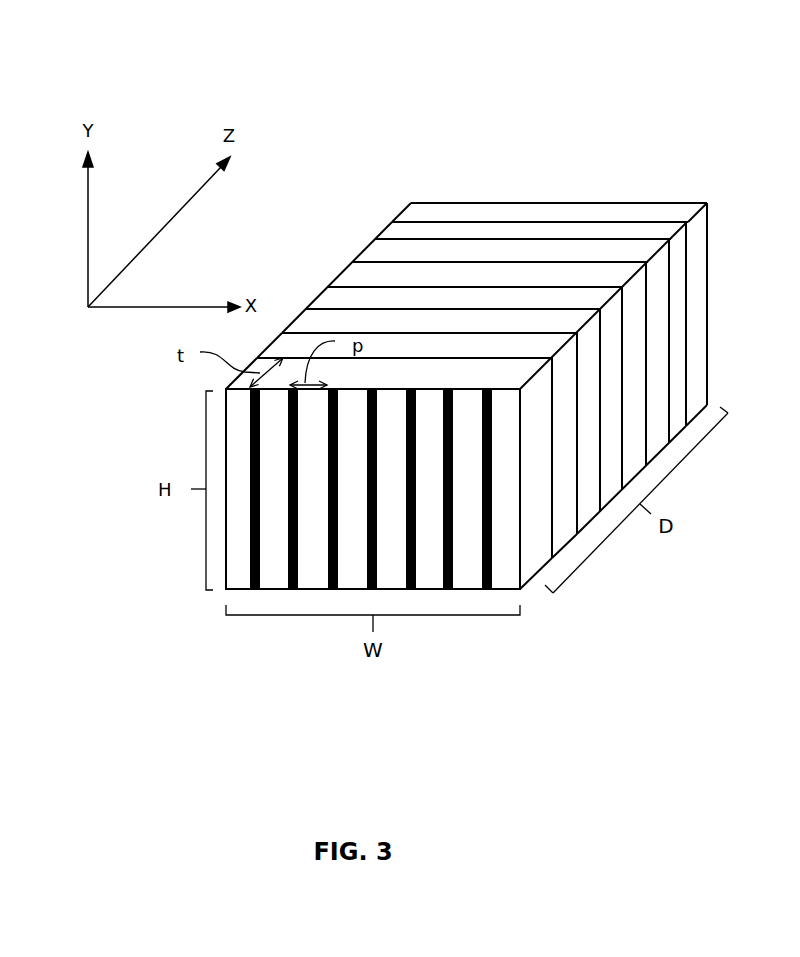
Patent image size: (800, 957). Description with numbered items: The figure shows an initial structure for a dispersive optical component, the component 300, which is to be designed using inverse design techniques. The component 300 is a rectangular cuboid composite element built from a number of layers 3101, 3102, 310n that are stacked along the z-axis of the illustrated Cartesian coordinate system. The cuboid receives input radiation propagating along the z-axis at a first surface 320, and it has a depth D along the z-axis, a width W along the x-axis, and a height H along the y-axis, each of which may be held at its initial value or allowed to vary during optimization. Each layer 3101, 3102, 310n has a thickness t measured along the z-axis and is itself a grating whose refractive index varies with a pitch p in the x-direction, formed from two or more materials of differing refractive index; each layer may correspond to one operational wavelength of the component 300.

The component 300 is at (348, 210).
The first layer 3101 is at (535, 550).
The second layer 3102 is at (560, 512).
The n-th layer 310n is at (695, 372).
The first surface 320 is at (265, 547).